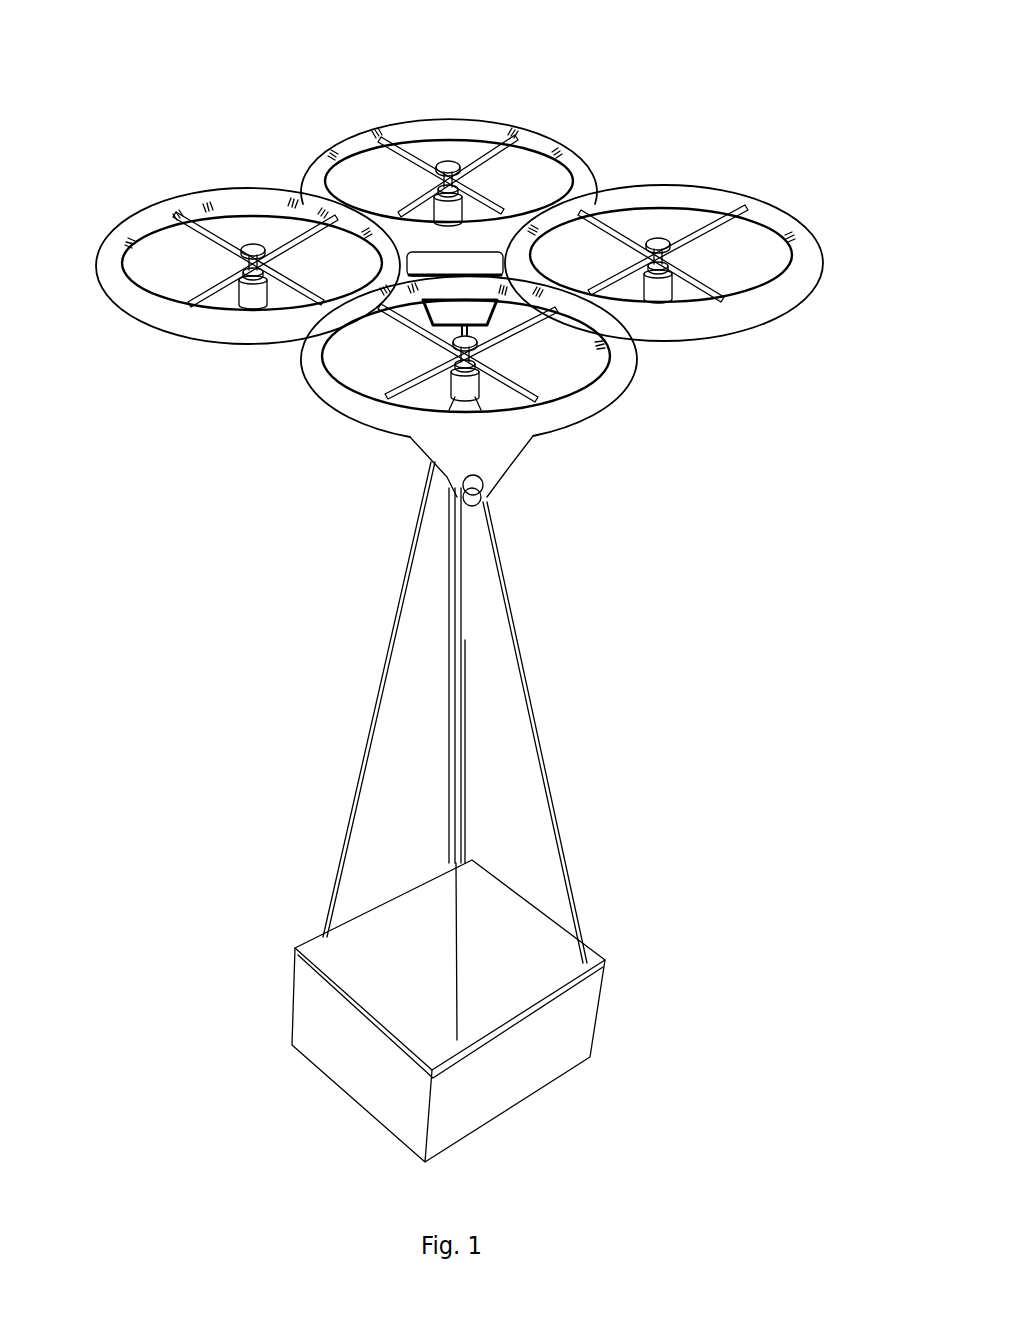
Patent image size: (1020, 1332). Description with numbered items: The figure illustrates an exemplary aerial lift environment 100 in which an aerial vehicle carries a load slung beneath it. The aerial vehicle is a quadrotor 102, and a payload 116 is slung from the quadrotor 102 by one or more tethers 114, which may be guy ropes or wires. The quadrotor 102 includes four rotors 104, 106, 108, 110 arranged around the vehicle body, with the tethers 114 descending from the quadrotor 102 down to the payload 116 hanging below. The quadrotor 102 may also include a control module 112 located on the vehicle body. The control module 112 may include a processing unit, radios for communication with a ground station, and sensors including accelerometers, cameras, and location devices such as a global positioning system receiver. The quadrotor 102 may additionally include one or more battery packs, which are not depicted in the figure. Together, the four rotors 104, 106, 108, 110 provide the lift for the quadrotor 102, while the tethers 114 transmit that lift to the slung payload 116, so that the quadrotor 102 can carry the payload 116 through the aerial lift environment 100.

The aerial lift environment 100 is at (472, 29).
The quadrotor 102 is at (462, 285).
The rotor 104 is at (500, 118).
The rotor 106 is at (133, 220).
The rotor 108 is at (603, 377).
The rotor 110 is at (792, 290).
The control module 112 is at (438, 306).
The tethers 114 is at (523, 720).
The payload 116 is at (590, 1013).